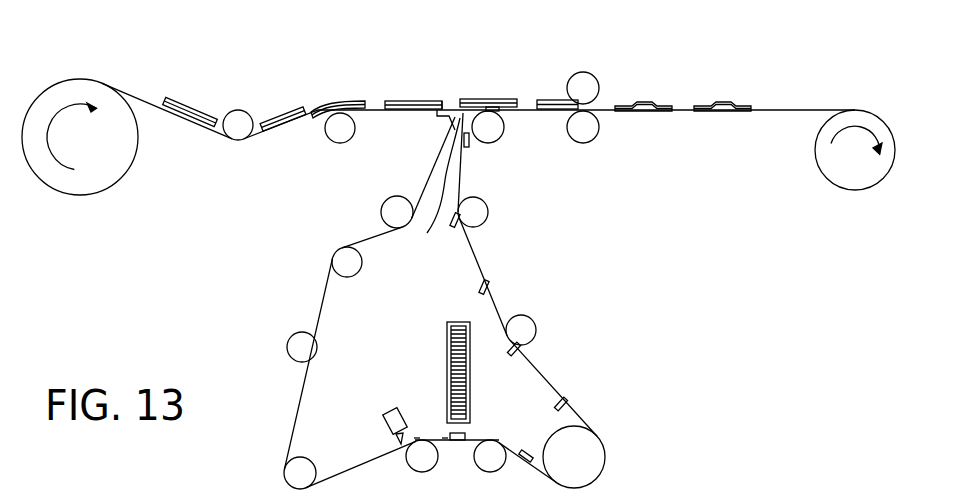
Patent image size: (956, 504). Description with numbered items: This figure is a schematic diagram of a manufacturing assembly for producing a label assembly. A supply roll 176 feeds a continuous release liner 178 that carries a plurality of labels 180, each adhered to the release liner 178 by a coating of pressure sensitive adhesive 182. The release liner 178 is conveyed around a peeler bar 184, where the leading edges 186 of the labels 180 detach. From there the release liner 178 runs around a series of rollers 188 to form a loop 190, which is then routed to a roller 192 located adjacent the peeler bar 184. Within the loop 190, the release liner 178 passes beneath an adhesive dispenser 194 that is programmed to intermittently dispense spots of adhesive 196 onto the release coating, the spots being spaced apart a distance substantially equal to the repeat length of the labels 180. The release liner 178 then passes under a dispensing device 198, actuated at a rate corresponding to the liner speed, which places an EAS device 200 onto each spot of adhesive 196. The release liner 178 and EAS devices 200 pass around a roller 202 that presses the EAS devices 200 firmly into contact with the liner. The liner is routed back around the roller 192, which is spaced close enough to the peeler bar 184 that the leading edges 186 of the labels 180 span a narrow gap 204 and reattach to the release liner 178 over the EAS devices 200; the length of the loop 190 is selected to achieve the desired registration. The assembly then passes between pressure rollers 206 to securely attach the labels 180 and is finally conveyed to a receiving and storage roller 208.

The supply roll 176 is at (102, 178).
The release liner 178 is at (142, 98).
The labels 180 is at (194, 105).
The pressure sensitive adhesive 182 is at (312, 115).
The peeler bar 184 is at (446, 119).
The leading edges 186 is at (436, 110).
The rollers 188 is at (388, 212).
The loop 190 is at (486, 258).
The roller 192 is at (495, 133).
The adhesive dispenser 194 is at (383, 418).
The adhesive 196 is at (445, 437).
The dispensing device 198 is at (441, 340).
The EAS device 200 is at (457, 228).
The roller 202 is at (598, 450).
The gap 204 is at (430, 188).
The pressure rollers 206 is at (590, 85).
The receiving and storage roller 208 is at (828, 170).